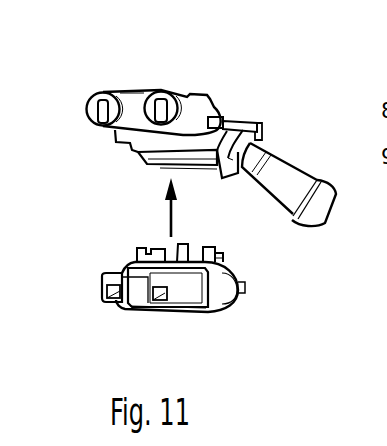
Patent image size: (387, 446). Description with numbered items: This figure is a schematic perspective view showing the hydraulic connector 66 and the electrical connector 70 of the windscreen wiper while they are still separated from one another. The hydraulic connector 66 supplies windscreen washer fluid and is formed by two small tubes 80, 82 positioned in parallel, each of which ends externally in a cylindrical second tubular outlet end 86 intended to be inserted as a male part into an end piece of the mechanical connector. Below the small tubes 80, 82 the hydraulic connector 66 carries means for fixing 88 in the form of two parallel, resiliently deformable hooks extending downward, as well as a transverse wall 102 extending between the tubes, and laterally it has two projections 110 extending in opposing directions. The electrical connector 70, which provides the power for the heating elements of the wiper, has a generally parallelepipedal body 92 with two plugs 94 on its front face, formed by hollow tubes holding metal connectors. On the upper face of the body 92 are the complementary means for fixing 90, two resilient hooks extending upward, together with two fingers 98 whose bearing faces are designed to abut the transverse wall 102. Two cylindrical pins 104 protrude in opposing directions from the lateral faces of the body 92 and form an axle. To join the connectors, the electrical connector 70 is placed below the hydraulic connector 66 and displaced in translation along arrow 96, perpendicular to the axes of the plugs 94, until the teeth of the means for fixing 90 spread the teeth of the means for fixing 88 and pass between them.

The hydraulic connector 66 is at (204, 79).
The electrical connector 70 is at (91, 283).
The small tube 80 is at (177, 90).
The small tube 82 is at (89, 98).
The second tubular outlet end 86 is at (147, 97).
The means for fixing 88 is at (137, 163).
The means for fixing 90 is at (139, 251).
The body 92 is at (213, 328).
The plugs 94 is at (153, 301).
The arrow 96 is at (167, 234).
The fingers 98 is at (180, 247).
The transverse wall 102 is at (188, 207).
The cylindrical pins 104 is at (243, 299).
The projections 110 is at (262, 132).